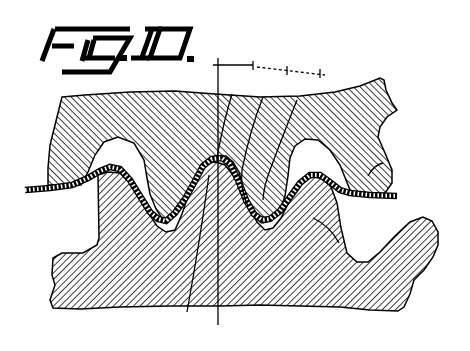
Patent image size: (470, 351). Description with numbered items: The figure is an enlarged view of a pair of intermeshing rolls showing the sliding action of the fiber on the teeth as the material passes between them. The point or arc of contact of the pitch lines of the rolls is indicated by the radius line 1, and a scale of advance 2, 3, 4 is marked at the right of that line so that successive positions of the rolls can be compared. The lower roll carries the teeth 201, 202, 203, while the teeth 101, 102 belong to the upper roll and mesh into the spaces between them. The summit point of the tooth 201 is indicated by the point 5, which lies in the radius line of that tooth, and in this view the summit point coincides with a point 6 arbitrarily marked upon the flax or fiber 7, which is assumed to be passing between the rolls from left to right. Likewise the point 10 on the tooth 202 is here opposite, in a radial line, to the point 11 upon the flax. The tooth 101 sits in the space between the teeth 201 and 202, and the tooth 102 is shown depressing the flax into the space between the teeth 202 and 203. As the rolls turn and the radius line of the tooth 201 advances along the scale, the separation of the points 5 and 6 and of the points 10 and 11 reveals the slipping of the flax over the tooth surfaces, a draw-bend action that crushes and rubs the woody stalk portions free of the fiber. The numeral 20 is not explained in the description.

The radius line 1 is at (233, 183).
The scale of advance point 2 is at (286, 58).
The scale of advance point 3 is at (288, 59).
The scale of advance point 4 is at (320, 63).
The summit point of tooth 5 is at (256, 141).
The point on fiber 6 is at (228, 117).
The flax or fiber 7 is at (43, 194).
The point on tooth 10 is at (338, 203).
The point on flax 11 is at (323, 178).
The die member 20 is at (76, 123).
The tooth 101 is at (292, 138).
The tooth 102 is at (383, 163).
The tooth 201 is at (190, 252).
The tooth 202 is at (362, 243).
The tooth 203 is at (413, 250).